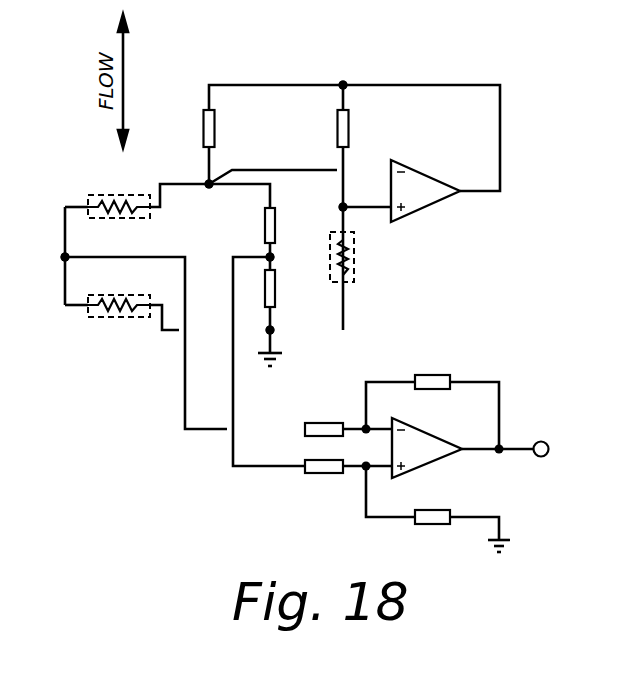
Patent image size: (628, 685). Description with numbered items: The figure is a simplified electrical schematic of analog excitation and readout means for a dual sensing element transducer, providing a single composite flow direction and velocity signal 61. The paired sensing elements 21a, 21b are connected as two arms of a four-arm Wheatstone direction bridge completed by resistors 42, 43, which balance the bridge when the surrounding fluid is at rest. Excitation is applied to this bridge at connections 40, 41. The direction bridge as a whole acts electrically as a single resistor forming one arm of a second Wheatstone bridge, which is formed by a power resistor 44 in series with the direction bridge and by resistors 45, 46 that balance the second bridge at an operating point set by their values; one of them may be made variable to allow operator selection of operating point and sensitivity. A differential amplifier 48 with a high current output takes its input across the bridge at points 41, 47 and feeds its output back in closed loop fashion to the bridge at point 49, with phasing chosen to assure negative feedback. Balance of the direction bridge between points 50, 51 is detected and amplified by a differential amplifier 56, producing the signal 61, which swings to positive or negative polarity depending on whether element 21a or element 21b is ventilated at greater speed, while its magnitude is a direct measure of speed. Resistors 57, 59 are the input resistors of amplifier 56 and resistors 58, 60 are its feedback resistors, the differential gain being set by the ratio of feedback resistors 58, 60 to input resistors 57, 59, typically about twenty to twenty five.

The sensing element 21a is at (118, 316).
The sensing element 21b is at (138, 197).
The connection 40 is at (273, 333).
The connection 41 is at (209, 186).
The resistor 42 is at (273, 220).
The resistor 43 is at (273, 300).
The power resistor 44 is at (205, 128).
The resistor 45 is at (347, 135).
The resistor 46 is at (350, 268).
The point 47 is at (342, 208).
The differential amplifier 48 is at (428, 185).
The point 49 is at (343, 85).
The point 50 is at (273, 257).
The point 51 is at (63, 257).
The differential amplifier 56 is at (428, 449).
The input resistor 57 is at (316, 428).
The feedback resistor 58 is at (433, 381).
The input resistor 59 is at (316, 471).
The feedback resistor 60 is at (433, 524).
The signal 61 is at (547, 456).